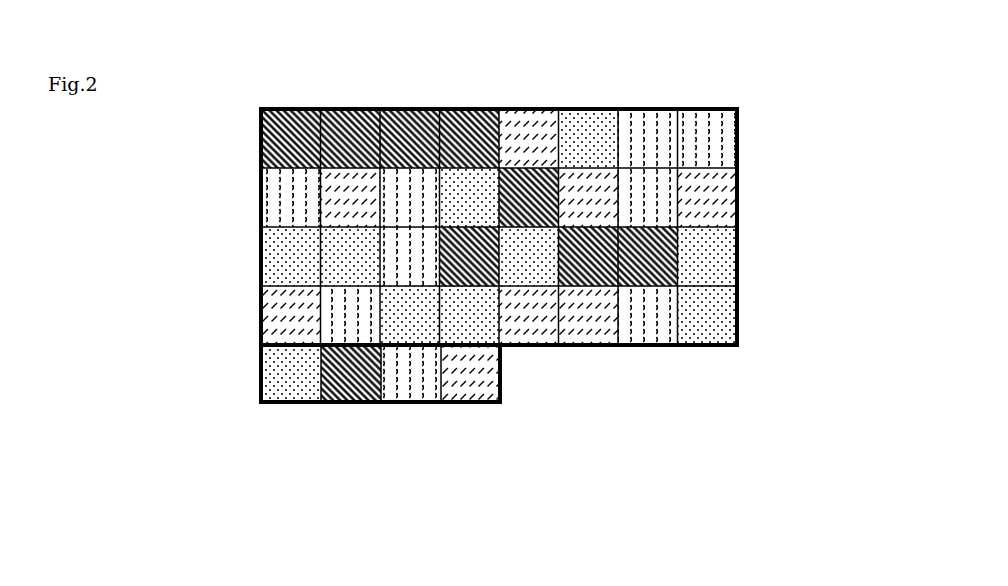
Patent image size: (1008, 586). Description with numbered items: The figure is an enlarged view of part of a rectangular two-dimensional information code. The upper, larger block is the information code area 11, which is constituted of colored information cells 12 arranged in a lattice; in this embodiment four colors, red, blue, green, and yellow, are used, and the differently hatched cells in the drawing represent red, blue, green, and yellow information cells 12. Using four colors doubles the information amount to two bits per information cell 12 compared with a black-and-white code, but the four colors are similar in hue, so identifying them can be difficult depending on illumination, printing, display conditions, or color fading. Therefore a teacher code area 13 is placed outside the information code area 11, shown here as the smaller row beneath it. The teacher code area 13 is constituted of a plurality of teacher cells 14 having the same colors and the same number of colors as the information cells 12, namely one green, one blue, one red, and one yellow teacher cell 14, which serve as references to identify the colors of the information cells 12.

The information code area 11 is at (740, 248).
The information cell 12 is at (394, 231).
The teacher code area 13 is at (427, 452).
The teacher cell 14 is at (387, 452).